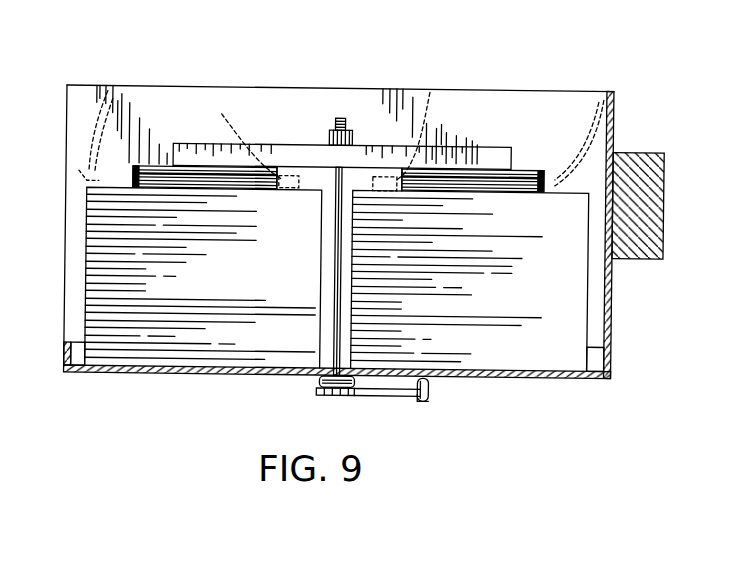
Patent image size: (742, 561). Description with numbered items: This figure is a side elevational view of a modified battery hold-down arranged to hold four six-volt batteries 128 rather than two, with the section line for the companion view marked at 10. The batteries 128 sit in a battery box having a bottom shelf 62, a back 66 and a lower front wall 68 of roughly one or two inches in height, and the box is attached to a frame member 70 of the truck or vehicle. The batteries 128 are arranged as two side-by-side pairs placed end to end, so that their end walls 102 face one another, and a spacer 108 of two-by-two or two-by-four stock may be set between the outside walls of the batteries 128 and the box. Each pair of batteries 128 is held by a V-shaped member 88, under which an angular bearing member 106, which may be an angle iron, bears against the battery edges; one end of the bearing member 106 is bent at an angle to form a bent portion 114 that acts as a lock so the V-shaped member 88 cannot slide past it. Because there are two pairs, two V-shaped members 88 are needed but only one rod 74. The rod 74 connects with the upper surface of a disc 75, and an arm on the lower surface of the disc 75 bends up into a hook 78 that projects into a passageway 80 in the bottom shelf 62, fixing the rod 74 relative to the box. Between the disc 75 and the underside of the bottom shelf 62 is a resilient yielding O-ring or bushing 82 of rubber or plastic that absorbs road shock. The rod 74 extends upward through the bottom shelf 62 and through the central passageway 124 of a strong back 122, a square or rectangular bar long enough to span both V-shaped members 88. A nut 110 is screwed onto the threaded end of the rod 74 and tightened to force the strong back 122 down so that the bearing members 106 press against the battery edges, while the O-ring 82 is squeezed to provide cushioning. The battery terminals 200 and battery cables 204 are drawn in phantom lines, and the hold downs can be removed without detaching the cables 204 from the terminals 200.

The section line for FIG. 10 is at (51, 40).
The bottom shelf 62 is at (546, 374).
The back 66 is at (613, 140).
The lower front wall 68 is at (67, 356).
The frame member 70 is at (666, 190).
The rod 74 is at (336, 231).
The disc 75 is at (360, 382).
The hook 78 is at (436, 384).
The passageway 80 is at (425, 392).
The resilient yielding means 82 is at (318, 382).
The V-shaped member 88 is at (134, 166).
The end walls 102 is at (88, 286).
The angular bearing member 106 is at (257, 186).
The 2 inch × 2 inch or 2 inch × 4 inch 108 is at (78, 338).
The nut 110 is at (338, 128).
The bent portion 114 is at (248, 180).
The strong back 122 is at (305, 142).
The central passageway 124 is at (348, 168).
The 6 volt batteries 128 is at (287, 267).
The battery terminals 200 is at (79, 168).
The battery cables 204 is at (226, 116).